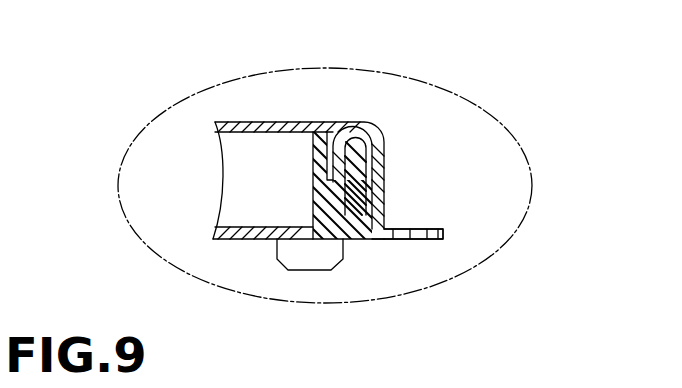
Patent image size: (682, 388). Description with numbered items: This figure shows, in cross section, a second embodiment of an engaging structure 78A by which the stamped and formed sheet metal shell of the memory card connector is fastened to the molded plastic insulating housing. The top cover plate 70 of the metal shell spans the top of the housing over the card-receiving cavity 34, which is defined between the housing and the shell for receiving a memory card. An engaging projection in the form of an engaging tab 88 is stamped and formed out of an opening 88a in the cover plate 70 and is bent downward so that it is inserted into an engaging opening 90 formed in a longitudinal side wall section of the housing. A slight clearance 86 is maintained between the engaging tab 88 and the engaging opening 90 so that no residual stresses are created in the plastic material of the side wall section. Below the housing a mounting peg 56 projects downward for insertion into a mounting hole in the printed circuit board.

The cavity 34 is at (243, 177).
The top cover plate 70 is at (250, 122).
The opening 88a is at (262, 128).
The engaging structure 78A is at (345, 92).
The engaging tab 88 is at (383, 150).
The engaging opening 90 is at (383, 192).
The clearance 86 is at (324, 130).
The mounting peg 56 is at (310, 247).